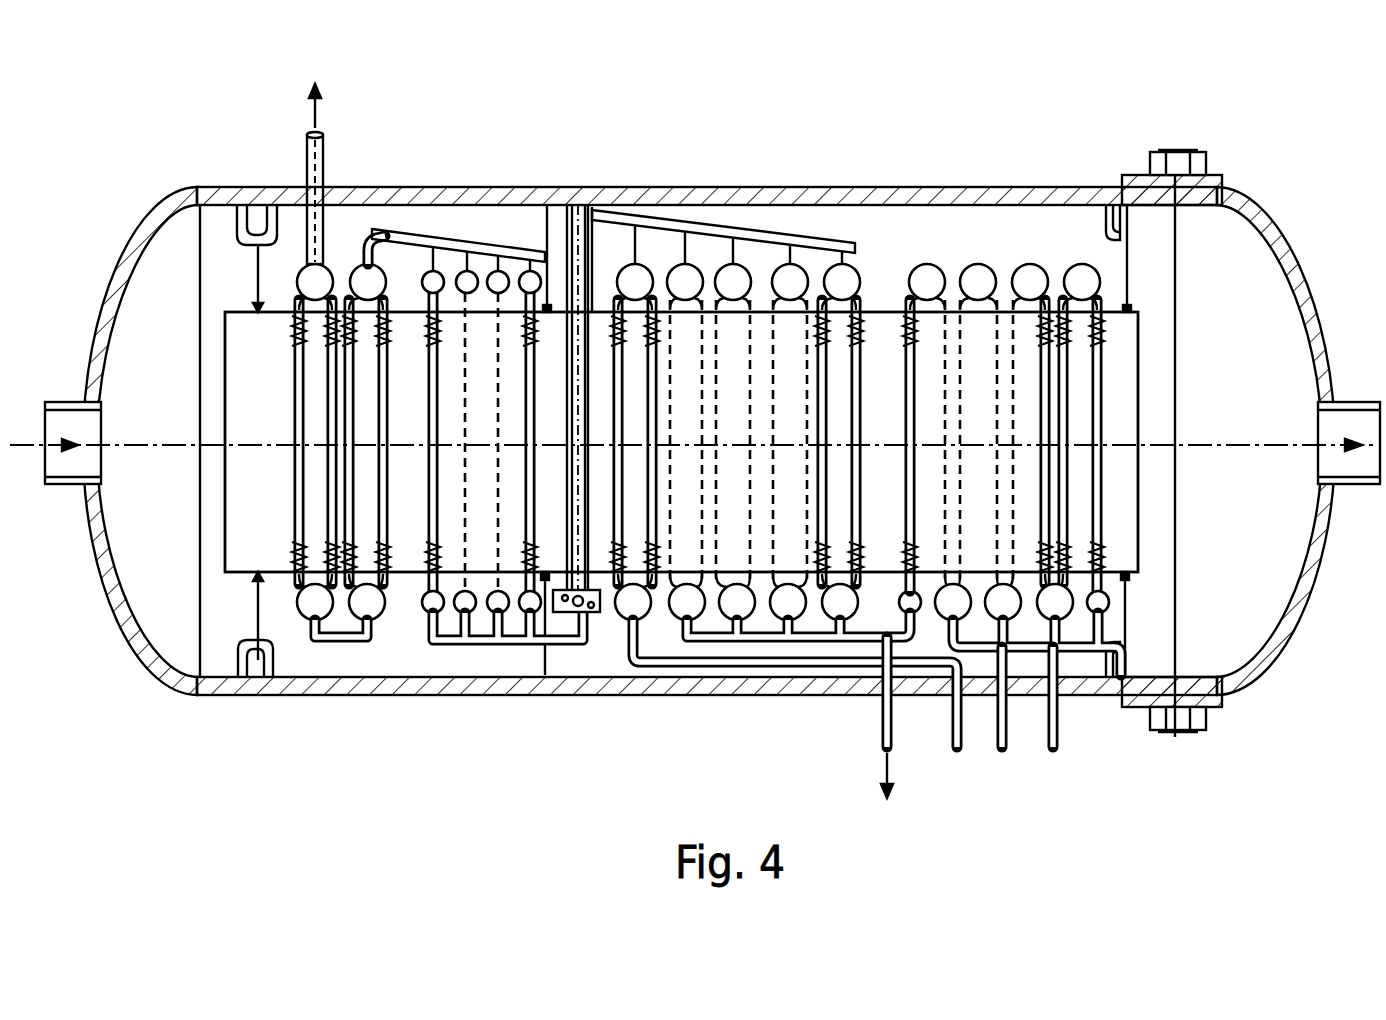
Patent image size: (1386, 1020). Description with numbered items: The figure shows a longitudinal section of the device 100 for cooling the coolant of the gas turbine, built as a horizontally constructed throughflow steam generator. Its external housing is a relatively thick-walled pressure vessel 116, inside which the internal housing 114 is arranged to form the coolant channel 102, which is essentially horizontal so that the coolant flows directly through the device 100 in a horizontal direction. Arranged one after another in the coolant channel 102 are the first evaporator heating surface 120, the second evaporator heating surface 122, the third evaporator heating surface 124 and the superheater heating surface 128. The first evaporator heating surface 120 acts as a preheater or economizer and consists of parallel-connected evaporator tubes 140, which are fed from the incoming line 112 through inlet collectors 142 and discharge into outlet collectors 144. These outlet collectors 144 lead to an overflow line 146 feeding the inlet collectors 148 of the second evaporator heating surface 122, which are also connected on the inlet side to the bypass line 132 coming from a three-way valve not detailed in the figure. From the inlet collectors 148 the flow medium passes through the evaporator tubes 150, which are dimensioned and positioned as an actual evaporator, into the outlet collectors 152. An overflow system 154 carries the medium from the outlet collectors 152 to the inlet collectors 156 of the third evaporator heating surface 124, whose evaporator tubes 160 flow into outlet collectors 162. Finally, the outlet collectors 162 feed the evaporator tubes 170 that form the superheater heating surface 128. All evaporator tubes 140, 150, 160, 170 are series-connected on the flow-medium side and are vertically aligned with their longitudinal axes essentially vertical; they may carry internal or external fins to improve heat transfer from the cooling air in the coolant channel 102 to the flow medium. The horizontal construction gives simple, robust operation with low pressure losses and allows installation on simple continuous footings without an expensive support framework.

The device for coolant cooling 100 is at (500, 85).
The coolant channel 102 is at (233, 557).
The incoming line 112 is at (1045, 718).
The internal housing 114 is at (402, 573).
The pressure vessel 116 is at (936, 187).
The first evaporator heating surface 120 is at (1106, 262).
The second evaporator heating surface 122 is at (760, 370).
The third evaporator heating surface 124 is at (465, 187).
The superheater heating surface 128 is at (246, 187).
The bypass line 132 is at (990, 716).
The evaporator tubes 140 is at (1068, 358).
The inlet collectors 142 is at (1098, 615).
The outlet collectors 144 is at (1082, 272).
The overflow line 146 is at (853, 683).
The inlet collectors 148 is at (738, 607).
The evaporator tubes 150 is at (707, 365).
The outlet collectors 152 is at (840, 273).
The overflow system 154 is at (590, 560).
The inlet collectors 156 is at (500, 646).
The evaporator tubes 160 is at (497, 378).
The outlet collectors 162 is at (498, 262).
The evaporator tubes 170 is at (298, 573).